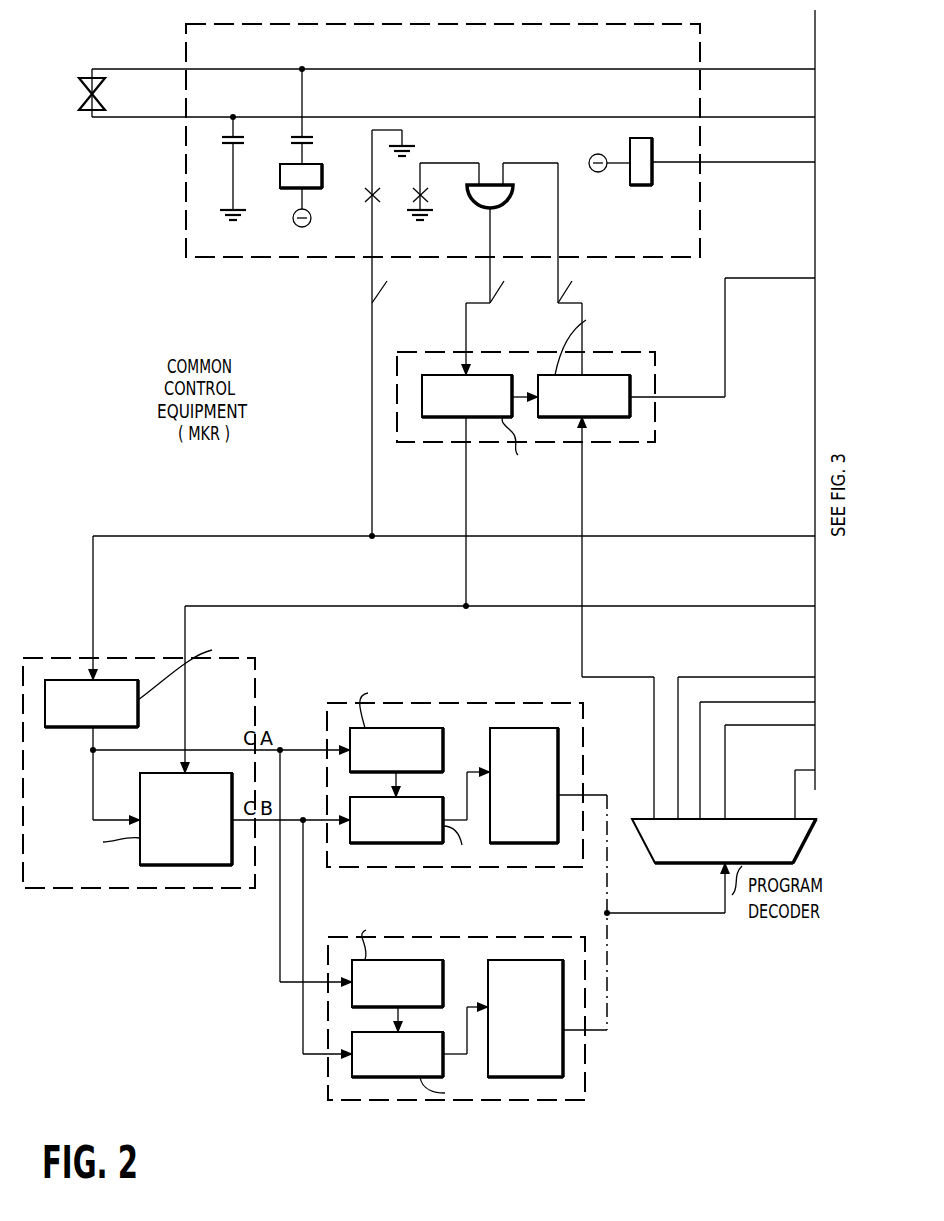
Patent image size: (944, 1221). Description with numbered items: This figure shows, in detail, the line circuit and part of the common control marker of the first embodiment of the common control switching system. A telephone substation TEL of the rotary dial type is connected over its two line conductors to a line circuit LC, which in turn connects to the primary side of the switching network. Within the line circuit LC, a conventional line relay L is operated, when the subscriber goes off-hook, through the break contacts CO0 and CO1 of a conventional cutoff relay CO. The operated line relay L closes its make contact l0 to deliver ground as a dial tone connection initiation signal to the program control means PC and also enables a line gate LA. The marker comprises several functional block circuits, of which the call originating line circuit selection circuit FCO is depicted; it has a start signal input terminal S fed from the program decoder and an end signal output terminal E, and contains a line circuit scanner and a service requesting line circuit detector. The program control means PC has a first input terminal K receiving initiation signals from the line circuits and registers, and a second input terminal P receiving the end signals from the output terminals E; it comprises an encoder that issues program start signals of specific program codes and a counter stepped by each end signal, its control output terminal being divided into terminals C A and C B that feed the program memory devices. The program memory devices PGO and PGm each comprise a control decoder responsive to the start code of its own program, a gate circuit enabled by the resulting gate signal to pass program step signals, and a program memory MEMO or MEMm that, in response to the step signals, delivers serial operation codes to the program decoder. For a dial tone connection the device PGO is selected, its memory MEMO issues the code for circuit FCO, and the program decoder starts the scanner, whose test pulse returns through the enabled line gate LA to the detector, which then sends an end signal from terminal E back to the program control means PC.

The line circuit LC is at (443, 140).
The telephone substation TEL is at (105, 93).
The first control signal output terminal A is at (453, 60).
The second control signal output terminal B is at (453, 106).
The control signal output terminal C is at (733, 150).
The break contact of cutoff relay CO0 is at (248, 168).
The break contact of cutoff relay CO1 is at (319, 116).
The line relay L is at (301, 195).
The make contact of line relay l0 is at (410, 334).
The line gate LA is at (519, 233).
The cutoff relay CO is at (622, 173).
The call originating line circuit selection circuit FCO is at (606, 400).
The end signal output terminal E is at (473, 513).
The start signal input terminal S is at (618, 618).
The first input terminal K is at (102, 608).
The second input terminal P is at (194, 689).
The program control means PC is at (156, 714).
The zeroth program memory device PGO is at (455, 784).
The m-th program memory device PGm is at (467, 1021).
The program memory MEMO is at (524, 785).
The program memory MEMm is at (525, 1018).